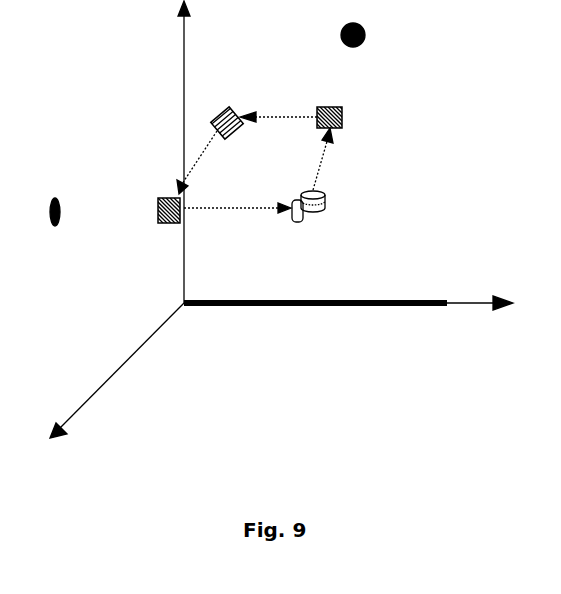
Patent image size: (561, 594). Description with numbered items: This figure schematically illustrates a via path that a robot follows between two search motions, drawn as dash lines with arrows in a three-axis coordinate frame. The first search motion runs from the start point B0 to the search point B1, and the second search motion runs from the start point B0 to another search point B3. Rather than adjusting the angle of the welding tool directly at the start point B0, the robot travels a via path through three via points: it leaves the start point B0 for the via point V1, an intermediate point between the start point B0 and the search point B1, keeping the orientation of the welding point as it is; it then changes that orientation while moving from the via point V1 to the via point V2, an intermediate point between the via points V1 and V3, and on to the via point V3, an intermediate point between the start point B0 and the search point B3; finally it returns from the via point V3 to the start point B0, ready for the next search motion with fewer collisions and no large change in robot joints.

The start point B0 is at (324, 206).
The search point B1 is at (372, 35).
The search point B3 is at (40, 212).
The via point V1 is at (338, 120).
The via point V2 is at (227, 112).
The via point V3 is at (166, 212).